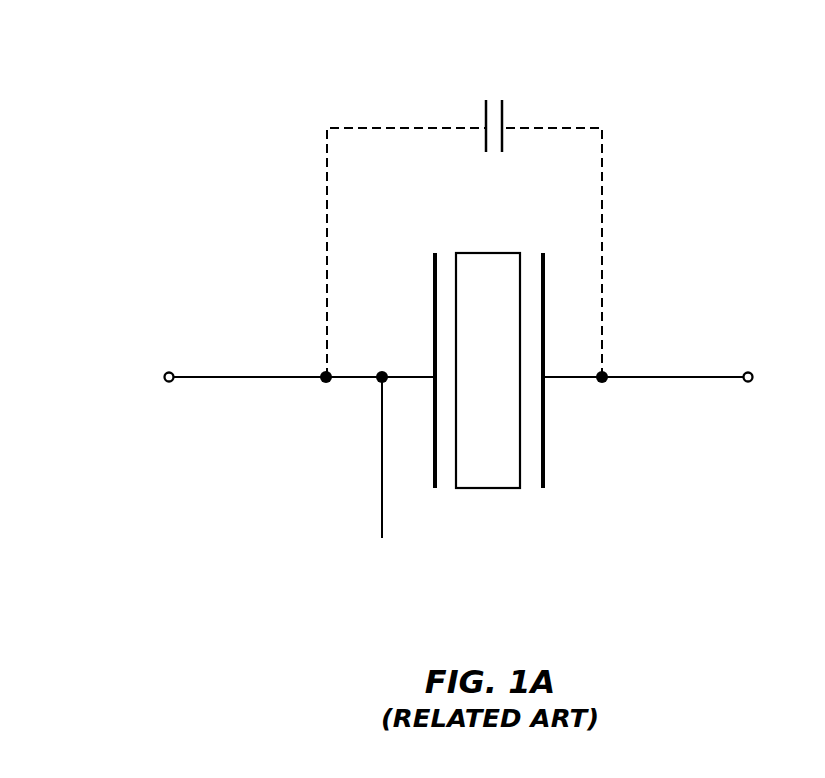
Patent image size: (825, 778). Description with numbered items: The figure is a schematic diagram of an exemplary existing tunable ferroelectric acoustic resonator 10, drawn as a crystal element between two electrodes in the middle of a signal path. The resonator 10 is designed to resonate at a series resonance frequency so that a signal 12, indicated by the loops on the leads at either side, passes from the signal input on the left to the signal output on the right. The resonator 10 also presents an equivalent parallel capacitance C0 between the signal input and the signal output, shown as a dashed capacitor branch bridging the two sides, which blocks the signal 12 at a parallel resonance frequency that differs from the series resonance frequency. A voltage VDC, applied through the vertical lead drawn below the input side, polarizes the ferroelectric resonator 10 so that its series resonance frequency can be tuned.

The tunable ferroelectric acoustic resonator 10 is at (475, 357).
The signal 12 is at (233, 357).
The equivalent parallel capacitance C0 is at (464, 218).
The voltage VDC is at (388, 479).